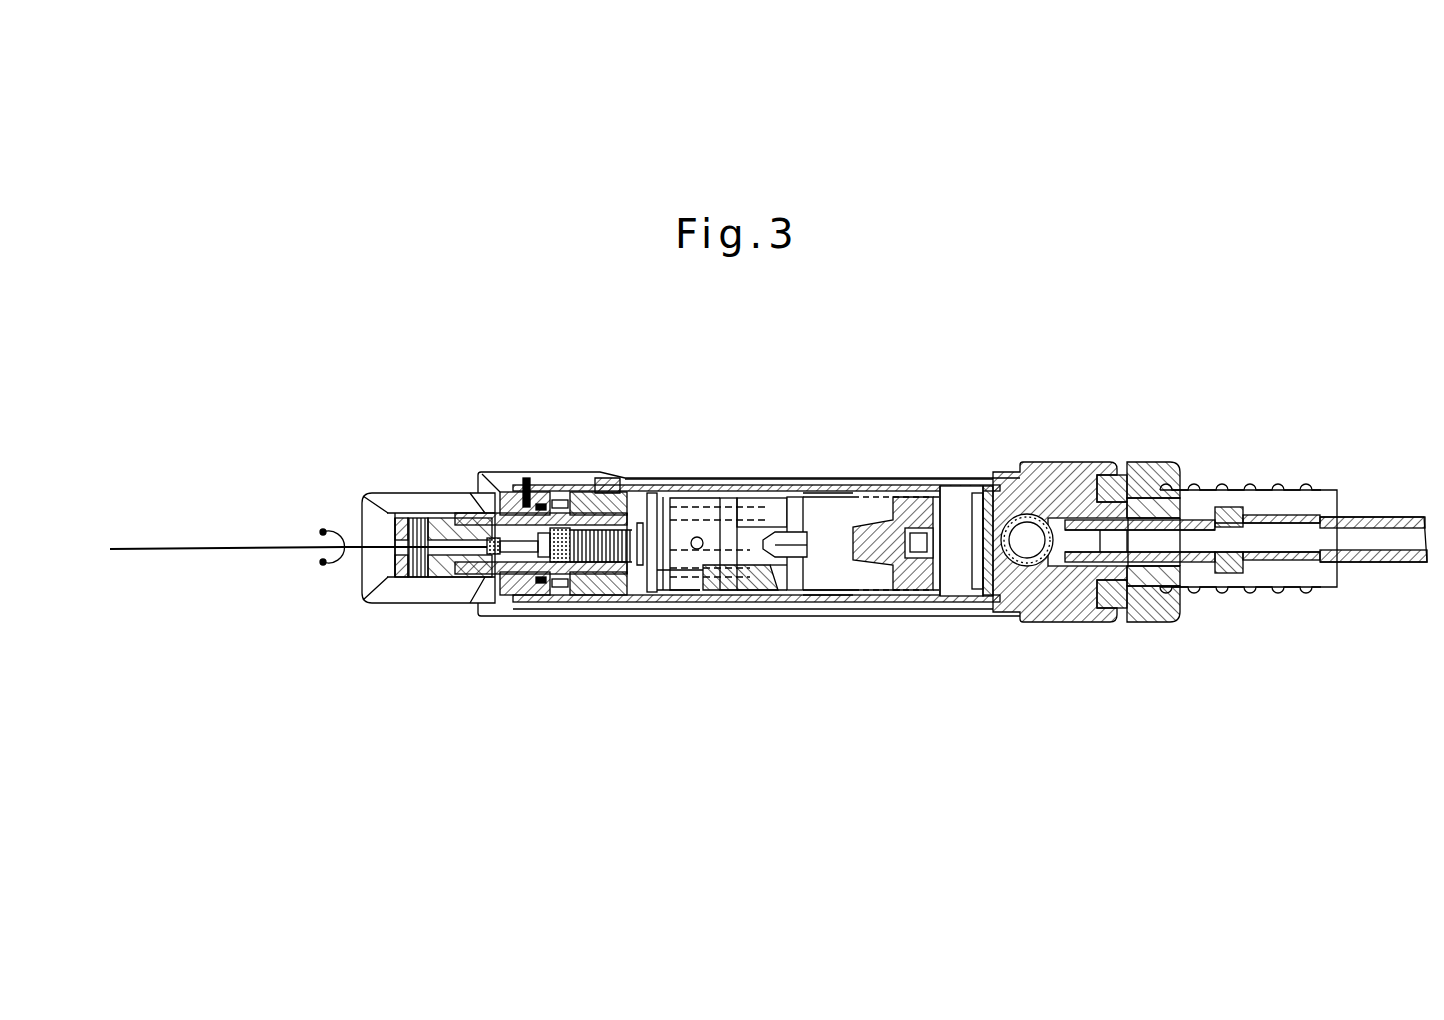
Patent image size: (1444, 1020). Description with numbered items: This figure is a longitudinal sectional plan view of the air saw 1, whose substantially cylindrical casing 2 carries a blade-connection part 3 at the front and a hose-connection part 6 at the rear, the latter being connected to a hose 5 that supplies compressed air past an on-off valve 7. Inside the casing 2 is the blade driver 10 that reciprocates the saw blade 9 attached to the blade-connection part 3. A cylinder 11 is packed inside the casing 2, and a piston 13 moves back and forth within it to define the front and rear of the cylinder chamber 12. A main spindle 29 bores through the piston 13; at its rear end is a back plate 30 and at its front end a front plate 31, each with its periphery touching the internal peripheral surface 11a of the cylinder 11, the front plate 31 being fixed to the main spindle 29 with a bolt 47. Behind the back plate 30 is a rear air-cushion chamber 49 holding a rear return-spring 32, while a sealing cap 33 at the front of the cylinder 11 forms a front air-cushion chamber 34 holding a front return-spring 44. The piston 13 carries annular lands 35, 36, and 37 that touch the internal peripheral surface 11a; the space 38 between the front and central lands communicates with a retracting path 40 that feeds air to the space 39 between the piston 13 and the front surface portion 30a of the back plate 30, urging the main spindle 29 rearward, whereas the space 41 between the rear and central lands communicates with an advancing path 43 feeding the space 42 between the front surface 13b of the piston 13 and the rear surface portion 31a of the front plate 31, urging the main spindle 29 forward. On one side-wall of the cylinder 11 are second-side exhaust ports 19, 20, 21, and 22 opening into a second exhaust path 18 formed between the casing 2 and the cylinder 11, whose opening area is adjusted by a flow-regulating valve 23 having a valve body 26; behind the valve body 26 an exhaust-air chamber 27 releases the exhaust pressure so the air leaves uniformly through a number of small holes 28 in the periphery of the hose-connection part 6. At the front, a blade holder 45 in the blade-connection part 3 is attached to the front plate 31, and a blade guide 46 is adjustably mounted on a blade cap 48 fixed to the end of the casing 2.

The air saw 1 is at (917, 422).
The casing 2 is at (805, 486).
The blade-connection part 3 is at (398, 478).
The hose 5 is at (1367, 515).
The hose-connection part 6 is at (1250, 488).
The on-off valve 7 is at (1028, 538).
The saw blade 9 is at (198, 553).
The blade driver 10 is at (823, 486).
The cylinder 11 is at (726, 485).
The internal peripheral surface 11a is at (847, 487).
The cylinder chamber 12 is at (877, 486).
The piston 13 is at (765, 487).
The front surface of the piston 13b is at (672, 610).
The second exhaust path 18 is at (760, 605).
The second-side exhaust port 19 is at (560, 613).
The second-side exhaust port 20 is at (670, 606).
The second-side exhaust port 21 is at (827, 606).
The second-side exhaust port 22 is at (967, 606).
The flow-regulating valve 23 is at (1174, 460).
The valve body 26 is at (1102, 475).
The exhaust-air chamber 27 is at (1138, 488).
The small holes 28 is at (1204, 498).
The main spindle 29 is at (865, 606).
The back plate 30 is at (903, 487).
The front surface portion of the back plate 30a is at (890, 612).
The front plate 31 is at (613, 608).
The rear surface portion of the front plate 31a is at (643, 614).
The rear return-spring 32 is at (942, 606).
The sealing cap 33 is at (518, 606).
The front air-cushion chamber 34 is at (538, 488).
The annular land 35 is at (663, 486).
The annular land 36 is at (745, 487).
The annular land 37 is at (888, 541).
The space 38 is at (697, 490).
The space 39 is at (805, 577).
The retracting path 40 is at (807, 545).
The space 41 is at (770, 490).
The space 42 is at (641, 478).
The advancing path 43 is at (783, 615).
The front return-spring 44 is at (571, 480).
The blade holder 45 is at (368, 493).
The blade guide 46 is at (327, 528).
The bolt 47 is at (583, 606).
The blade cap 48 is at (477, 614).
The rear air-cushion chamber 49 is at (952, 487).